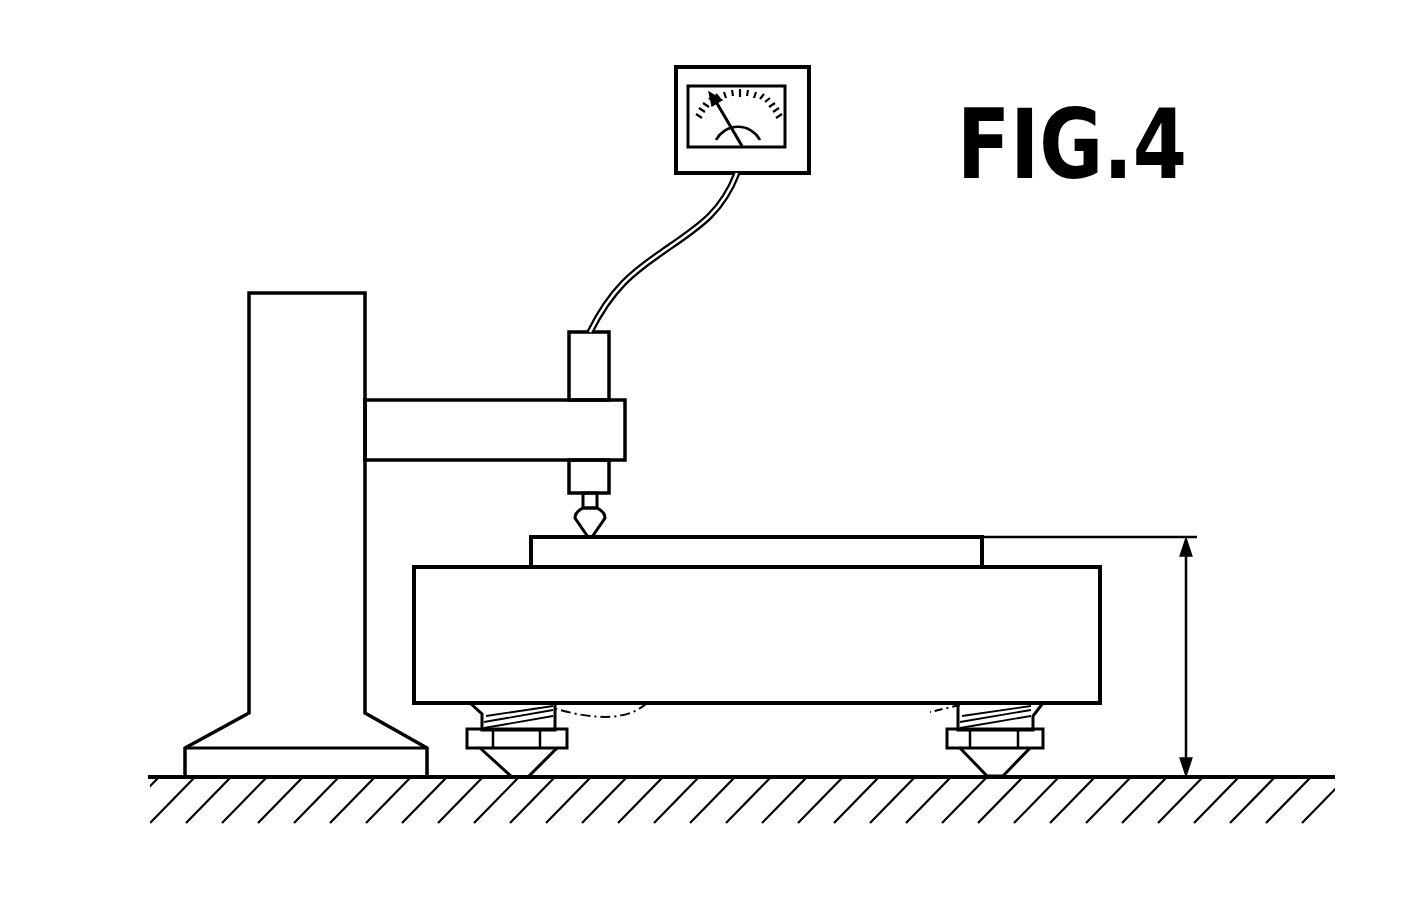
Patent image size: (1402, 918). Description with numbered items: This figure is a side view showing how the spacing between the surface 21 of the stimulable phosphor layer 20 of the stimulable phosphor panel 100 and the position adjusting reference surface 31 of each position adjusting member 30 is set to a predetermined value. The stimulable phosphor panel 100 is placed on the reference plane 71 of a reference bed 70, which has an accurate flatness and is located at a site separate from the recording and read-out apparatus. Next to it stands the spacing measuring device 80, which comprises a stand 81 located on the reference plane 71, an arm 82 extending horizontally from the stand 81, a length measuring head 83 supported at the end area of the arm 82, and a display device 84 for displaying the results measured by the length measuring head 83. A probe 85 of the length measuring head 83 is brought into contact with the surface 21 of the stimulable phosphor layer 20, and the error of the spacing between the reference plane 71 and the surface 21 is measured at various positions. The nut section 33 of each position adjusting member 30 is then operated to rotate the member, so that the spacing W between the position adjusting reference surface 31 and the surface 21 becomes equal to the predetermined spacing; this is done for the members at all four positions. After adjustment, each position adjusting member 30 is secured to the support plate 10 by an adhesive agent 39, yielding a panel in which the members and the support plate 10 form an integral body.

The support plate 10 is at (1105, 612).
The stimulable phosphor layer 20 is at (917, 548).
The surface of the stimulable phosphor layer 21 is at (795, 537).
The position adjusting member 30 is at (714, 795).
The position adjusting reference surface 31 is at (512, 777).
The nut section 33 is at (467, 750).
The adhesive agent 39 is at (653, 702).
The reference bed 70 is at (1285, 790).
The reference plane 71 is at (1258, 777).
The spacing measuring device 80 is at (385, 176).
The stand 81 is at (312, 310).
The arm 82 is at (468, 413).
The length measuring head 83 is at (582, 377).
The display device 84 is at (680, 158).
The probe 85 is at (590, 522).
The stimulable phosphor panel 100 is at (1057, 483).